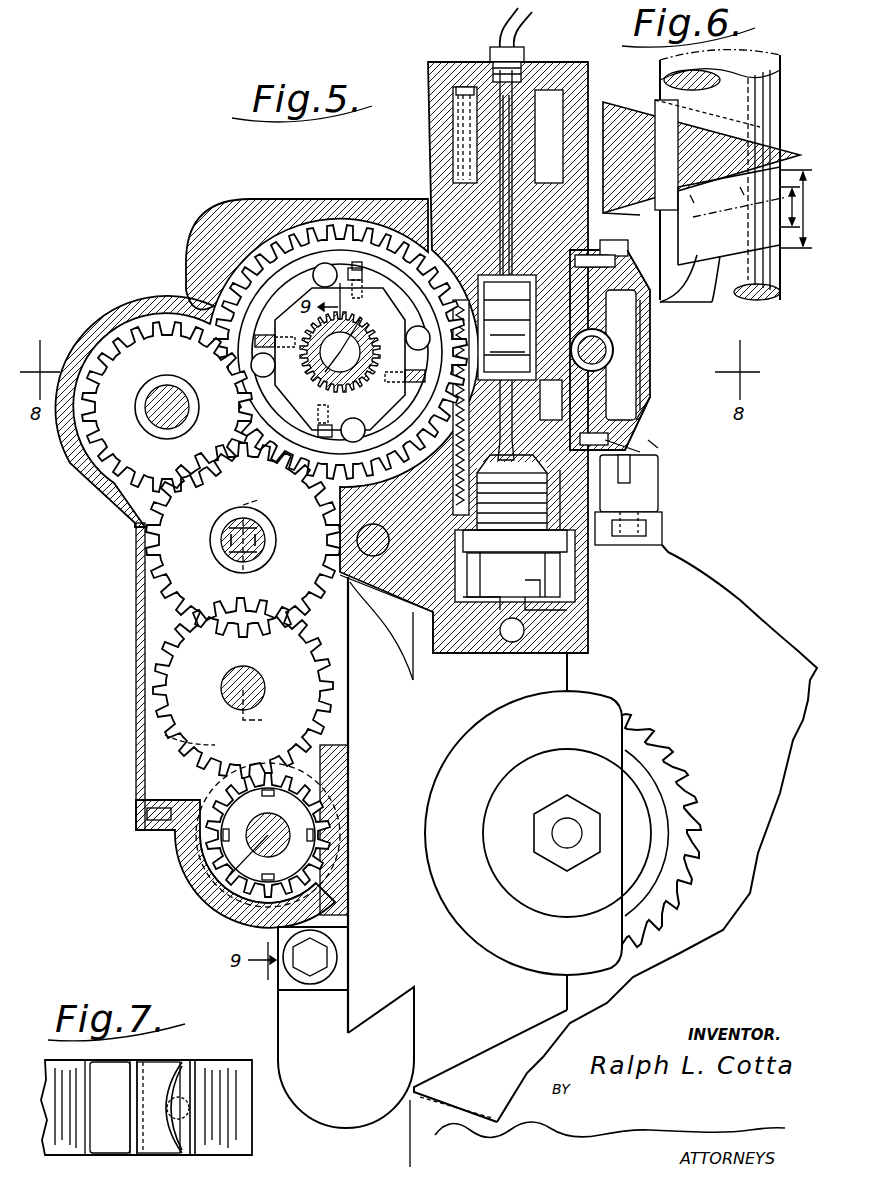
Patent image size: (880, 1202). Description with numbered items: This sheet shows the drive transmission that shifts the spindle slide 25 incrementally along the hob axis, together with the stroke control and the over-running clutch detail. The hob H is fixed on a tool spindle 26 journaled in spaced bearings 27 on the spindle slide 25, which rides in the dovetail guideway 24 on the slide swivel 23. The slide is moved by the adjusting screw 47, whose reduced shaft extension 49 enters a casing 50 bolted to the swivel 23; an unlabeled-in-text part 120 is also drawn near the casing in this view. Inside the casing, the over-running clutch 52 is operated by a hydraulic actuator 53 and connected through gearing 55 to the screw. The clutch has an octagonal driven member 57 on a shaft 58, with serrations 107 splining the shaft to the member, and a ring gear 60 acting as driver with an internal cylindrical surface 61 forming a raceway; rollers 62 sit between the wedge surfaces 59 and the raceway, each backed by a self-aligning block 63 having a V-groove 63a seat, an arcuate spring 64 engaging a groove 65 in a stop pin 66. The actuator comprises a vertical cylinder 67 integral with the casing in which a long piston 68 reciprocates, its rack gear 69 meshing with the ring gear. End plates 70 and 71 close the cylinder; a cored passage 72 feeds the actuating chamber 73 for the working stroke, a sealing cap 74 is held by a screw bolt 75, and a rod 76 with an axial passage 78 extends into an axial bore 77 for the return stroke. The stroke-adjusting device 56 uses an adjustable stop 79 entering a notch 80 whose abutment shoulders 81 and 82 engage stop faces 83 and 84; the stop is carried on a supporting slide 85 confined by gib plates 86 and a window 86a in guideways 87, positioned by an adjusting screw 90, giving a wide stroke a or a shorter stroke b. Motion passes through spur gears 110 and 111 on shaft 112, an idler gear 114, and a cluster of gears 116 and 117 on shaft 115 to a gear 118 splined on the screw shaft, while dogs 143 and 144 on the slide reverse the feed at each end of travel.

In FIG. 5, the slide swivel 23 is at (312, 1100).
In FIG. 5, the dovetail guideway 24 is at (395, 680).
In FIG. 5, the spindle slide 25 is at (445, 1092).
In FIG. 5, the tool spindle 26 is at (555, 833).
In FIG. 5, the bearings 27 is at (567, 720).
In FIG. 5, the hob H is at (680, 768).
In FIG. 5, the adjusting screw 47 is at (240, 880).
In FIG. 5, the shaft extension 49 is at (290, 835).
In FIG. 5, the casing 50 is at (172, 882).
In FIG. 5, the over-running clutch 52 is at (401, 200).
In FIG. 5, the hydraulic actuator 53 is at (593, 580).
In FIG. 5, the gearing 55 is at (148, 780).
In FIG. 5, the stroke-adjusting device 56 is at (654, 359).
In FIG. 5, the driven member 57 is at (365, 395).
In FIG. 7, the driven member 57 is at (228, 1150).
In FIG. 5, the shaft 58 is at (312, 378).
In FIG. 5, the wedge surfaces 59 is at (360, 274).
In FIG. 5, the ring gear 60 is at (262, 215).
In FIG. 5, the cylindrical surface 61 is at (250, 290).
In FIG. 5, the wedge elements 62 is at (326, 262).
In FIG. 7, the wedge elements 62 is at (104, 1075).
In FIG. 5, the block 63 is at (355, 265).
In FIG. 7, the block 63 is at (152, 1075).
In FIG. 5, the V-groove 63a is at (275, 345).
In FIG. 7, the arcuate spring 64 is at (190, 1062).
In FIG. 7, the groove 65 is at (190, 1090).
In FIG. 7, the stop pin 66 is at (192, 1120).
In FIG. 5, the cylinder 67 is at (610, 612).
In FIG. 5, the piston 68 is at (660, 463).
In FIG. 5, the rack gear 69 is at (470, 392).
In FIG. 5, the end plate 70 is at (592, 638).
In FIG. 5, the end plate 71 is at (440, 62).
In FIG. 5, the cored passage 72 is at (510, 642).
In FIG. 5, the actuating chamber 73 is at (485, 615).
In FIG. 5, the sealing cap 74 is at (598, 560).
In FIG. 5, the screw bolt 75 is at (540, 615).
In FIG. 5, the rod 76 is at (522, 153).
In FIG. 5, the axial bore 77 is at (640, 326).
In FIG. 5, the axial passage 78 is at (508, 124).
In FIG. 5, the adjustable stop 79 is at (552, 400).
In FIG. 6, the adjustable stop 79 is at (622, 116).
In FIG. 5, the notch 80 is at (530, 418).
In FIG. 6, the notch 80 is at (700, 230).
In FIG. 5, the abutment shoulder 81 is at (532, 437).
In FIG. 6, the abutment shoulder 81 is at (715, 296).
In FIG. 5, the abutment shoulder 82 is at (533, 318).
In FIG. 6, the abutment shoulder 82 is at (775, 150).
In FIG. 5, the stop face 83 is at (533, 350).
In FIG. 6, the stop face 83 is at (622, 213).
In FIG. 5, the stop face 84 is at (533, 334).
In FIG. 6, the stop face 84 is at (640, 100).
In FIG. 5, the supporting slide 85 is at (614, 350).
In FIG. 5, the gib plates 86 is at (655, 306).
In FIG. 5, the window 86a is at (662, 444).
In FIG. 5, the guideways 87 is at (620, 282).
In FIG. 5, the adjusting screw 90 is at (650, 380).
In FIG. 5, the serrations 107 is at (343, 352).
In FIG. 5, the spur gear 110 is at (165, 588).
In FIG. 5, the spur gear 111 is at (200, 562).
In FIG. 5, the shaft 112 is at (236, 542).
In FIG. 5, the idler gear 114 is at (90, 480).
In FIG. 5, the shaft 115 is at (236, 685).
In FIG. 5, the gear 116 is at (200, 706).
In FIG. 5, the gear 117 is at (170, 740).
In FIG. 5, the gear 118 is at (205, 862).
In FIG. 5, the flange 120 is at (372, 680).
In FIG. 5, the dog 143 is at (650, 480).
In FIG. 5, the dog 144 is at (640, 455).
In FIG. 6, the distance a is at (798, 209).
In FIG. 6, the distance b is at (790, 207).